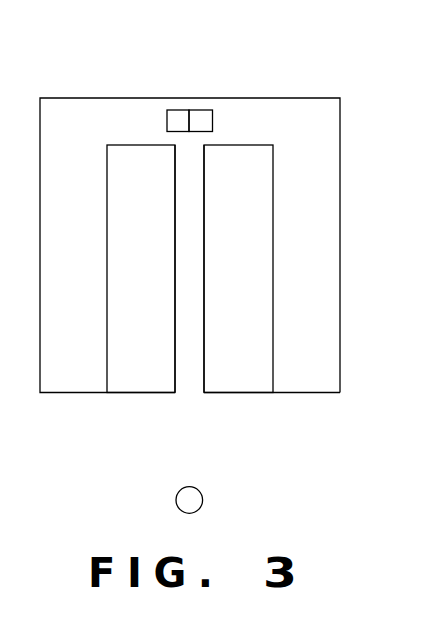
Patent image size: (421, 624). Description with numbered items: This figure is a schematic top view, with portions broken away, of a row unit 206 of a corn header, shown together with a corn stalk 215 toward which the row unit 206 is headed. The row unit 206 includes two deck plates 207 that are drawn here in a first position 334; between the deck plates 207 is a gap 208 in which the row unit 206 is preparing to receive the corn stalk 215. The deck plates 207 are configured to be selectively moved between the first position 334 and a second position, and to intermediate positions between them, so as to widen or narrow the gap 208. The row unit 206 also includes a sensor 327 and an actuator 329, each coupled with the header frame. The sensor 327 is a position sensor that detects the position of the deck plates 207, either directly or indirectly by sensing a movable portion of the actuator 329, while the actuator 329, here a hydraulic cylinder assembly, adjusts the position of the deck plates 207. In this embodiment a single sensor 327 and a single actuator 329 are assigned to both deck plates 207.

The row unit 206 is at (320, 92).
The deck plates 207 is at (165, 220).
The gap 208 is at (191, 392).
The corn stalk 215 is at (176, 503).
The sensor 327 is at (178, 112).
The actuator 329 is at (201, 112).
The first position 334 is at (270, 414).